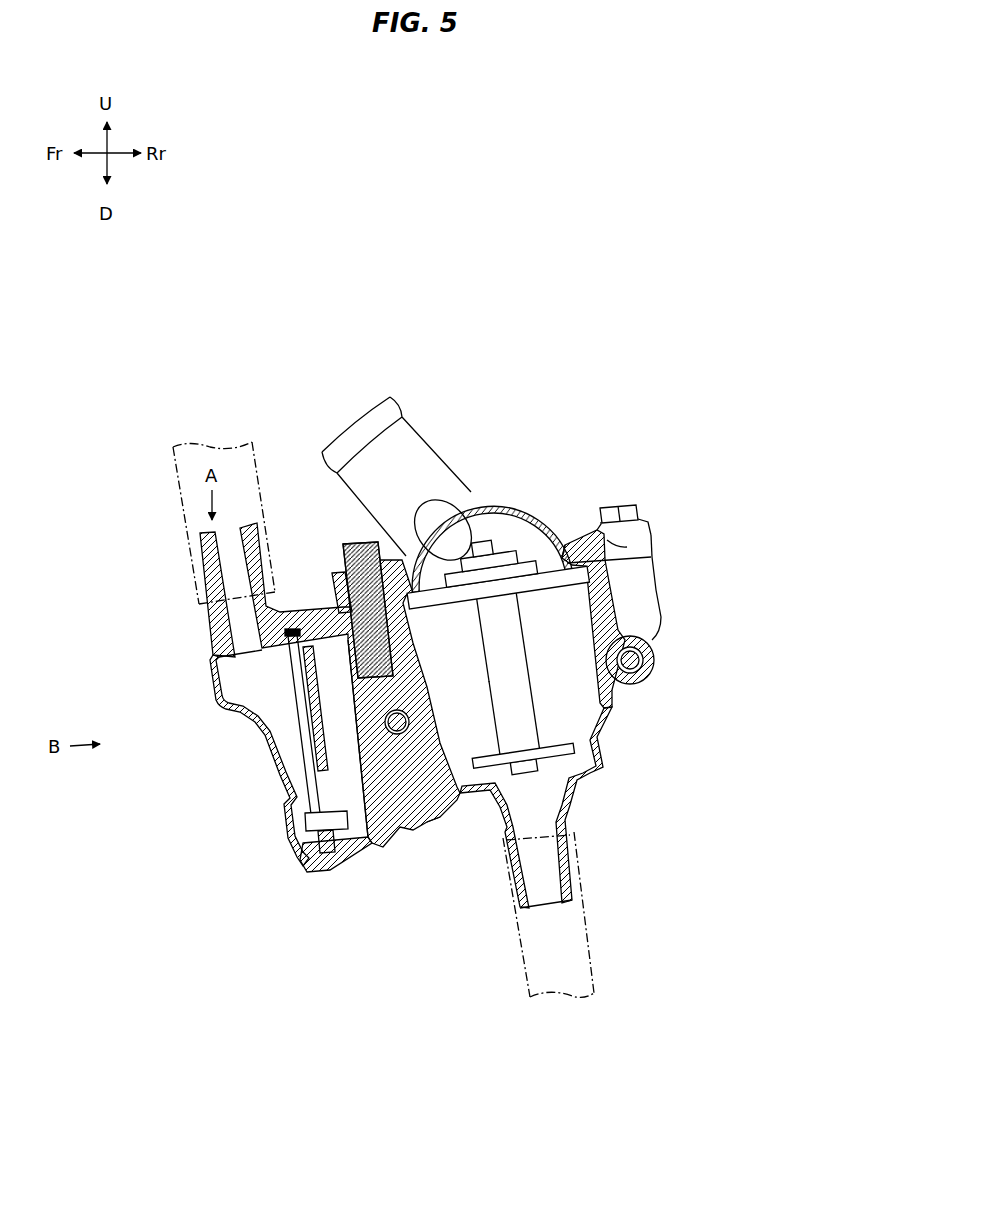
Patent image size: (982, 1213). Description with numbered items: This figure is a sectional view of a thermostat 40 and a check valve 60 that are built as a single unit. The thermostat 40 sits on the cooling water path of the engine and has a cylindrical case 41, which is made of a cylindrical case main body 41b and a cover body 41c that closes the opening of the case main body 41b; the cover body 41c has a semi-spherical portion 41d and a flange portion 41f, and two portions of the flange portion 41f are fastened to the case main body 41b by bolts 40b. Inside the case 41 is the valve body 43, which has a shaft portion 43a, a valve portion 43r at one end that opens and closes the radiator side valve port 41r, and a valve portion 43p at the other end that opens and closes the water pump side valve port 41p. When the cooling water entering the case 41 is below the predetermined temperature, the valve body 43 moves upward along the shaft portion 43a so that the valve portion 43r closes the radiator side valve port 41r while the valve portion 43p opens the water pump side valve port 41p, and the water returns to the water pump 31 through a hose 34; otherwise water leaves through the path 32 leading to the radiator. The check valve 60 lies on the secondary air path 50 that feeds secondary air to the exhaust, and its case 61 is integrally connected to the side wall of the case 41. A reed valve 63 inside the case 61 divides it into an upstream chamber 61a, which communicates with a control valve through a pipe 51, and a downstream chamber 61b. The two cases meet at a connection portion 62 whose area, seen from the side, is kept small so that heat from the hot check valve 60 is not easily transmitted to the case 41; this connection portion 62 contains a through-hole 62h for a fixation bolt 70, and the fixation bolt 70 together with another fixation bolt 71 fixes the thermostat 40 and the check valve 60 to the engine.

The water pump 31 is at (564, 1018).
The path leading to a radiator 32 is at (336, 410).
The hose 34 is at (594, 970).
The thermostat 40 is at (664, 577).
The bolts 40b is at (344, 547).
The case 41 is at (617, 603).
The case main body 41b is at (612, 602).
The cover body 41c is at (641, 526).
The semi-spherical portion 41d is at (492, 490).
The flange portion 41f is at (333, 575).
The water pump side valve port 41p is at (547, 777).
The radiator side valve port 41r is at (560, 563).
The valve body 43 is at (545, 694).
The shaft portion 43a is at (520, 662).
The valve portion 43p is at (573, 748).
The valve portion 43r is at (532, 580).
The secondary air path 50 is at (177, 486).
The pipe 51 is at (180, 514).
The check valve 60 is at (207, 660).
The case 61 is at (262, 730).
The upstream chamber 61a is at (243, 685).
The downstream chamber 61b is at (330, 675).
The connection portion 62 is at (383, 850).
The through-hole 62h is at (447, 817).
The reed valve 63 is at (313, 740).
The fixation bolt 70 is at (399, 736).
The fixation bolt 71 is at (655, 663).